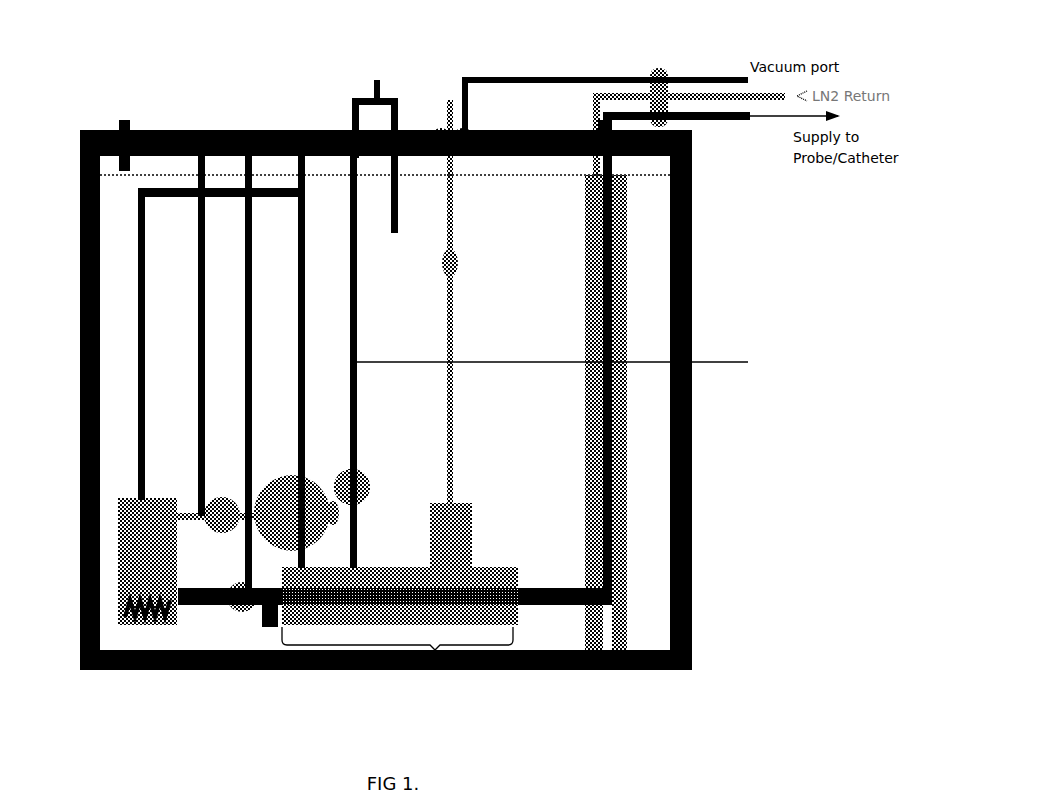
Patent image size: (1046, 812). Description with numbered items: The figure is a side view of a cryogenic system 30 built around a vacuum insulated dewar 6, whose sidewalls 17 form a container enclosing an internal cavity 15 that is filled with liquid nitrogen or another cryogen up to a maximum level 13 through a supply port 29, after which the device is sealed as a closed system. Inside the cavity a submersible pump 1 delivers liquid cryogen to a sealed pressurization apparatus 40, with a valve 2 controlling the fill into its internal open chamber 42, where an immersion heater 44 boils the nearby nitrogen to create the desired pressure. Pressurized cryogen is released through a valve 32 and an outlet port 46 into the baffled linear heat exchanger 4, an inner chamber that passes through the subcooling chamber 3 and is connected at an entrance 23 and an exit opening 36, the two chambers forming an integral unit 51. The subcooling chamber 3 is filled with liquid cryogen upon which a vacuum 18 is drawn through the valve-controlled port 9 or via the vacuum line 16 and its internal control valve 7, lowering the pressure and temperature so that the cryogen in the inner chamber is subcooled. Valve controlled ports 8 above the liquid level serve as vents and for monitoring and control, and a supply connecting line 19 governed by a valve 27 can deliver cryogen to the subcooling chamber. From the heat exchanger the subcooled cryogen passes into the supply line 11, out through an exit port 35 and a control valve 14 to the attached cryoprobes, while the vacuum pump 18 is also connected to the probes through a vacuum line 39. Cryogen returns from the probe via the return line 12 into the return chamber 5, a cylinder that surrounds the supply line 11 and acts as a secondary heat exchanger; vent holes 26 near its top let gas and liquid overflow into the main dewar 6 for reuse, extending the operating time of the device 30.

The submersible pump 1 is at (273, 482).
The valve 2 is at (215, 533).
The subcooling chamber 3 is at (317, 625).
The heat exchanger 4 is at (353, 605).
The return chamber 5 is at (627, 285).
The vacuum insulated dewar 6 is at (692, 428).
The control valve 7 is at (458, 253).
The valve controlled ports 8 is at (203, 133).
The valve-controlled port 9 is at (447, 140).
The supply line 11 is at (728, 122).
The return line 12 is at (708, 97).
The maximum level 13 is at (541, 174).
The control valve 14 is at (670, 68).
The internal cavity 15 is at (647, 402).
The vacuum line 16 is at (455, 437).
The sidewalls 17 is at (663, 670).
The vacuum pump 18 is at (460, 128).
The supply connecting line 19 is at (563, 363).
The entrance 23 is at (273, 620).
The vent holes 26 is at (623, 245).
The valve 27 is at (360, 503).
The supply port 29 is at (130, 120).
The cryogenic system 30 is at (752, 325).
The valve 32 is at (240, 613).
The exit port 35 is at (610, 127).
The exit opening 36 is at (522, 607).
The vacuum line 39 is at (580, 77).
The pressurization apparatus 40 is at (118, 544).
The internal open chamber 42 is at (148, 570).
The immersion heater 44 is at (160, 610).
The outlet port 46 is at (177, 602).
The integral unit 51 is at (447, 670).